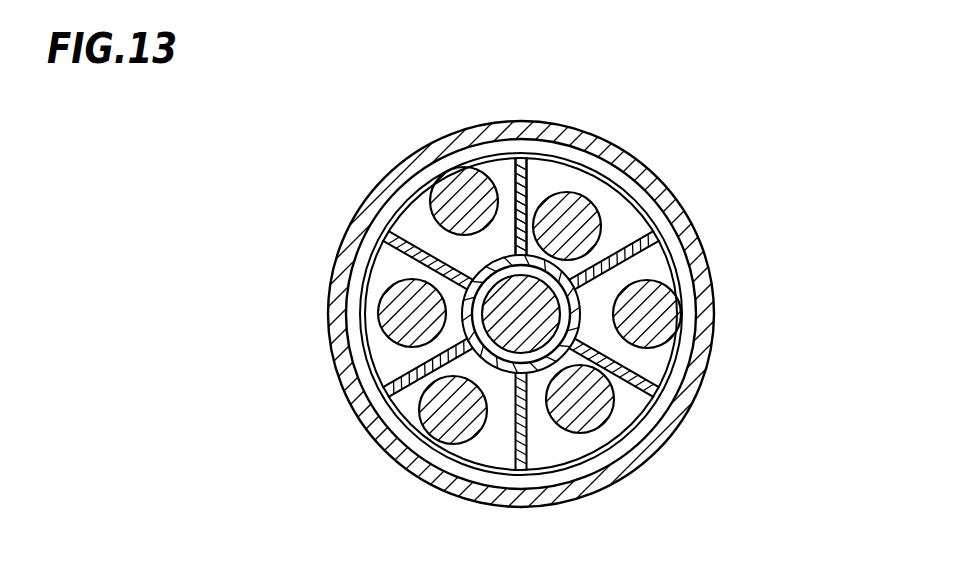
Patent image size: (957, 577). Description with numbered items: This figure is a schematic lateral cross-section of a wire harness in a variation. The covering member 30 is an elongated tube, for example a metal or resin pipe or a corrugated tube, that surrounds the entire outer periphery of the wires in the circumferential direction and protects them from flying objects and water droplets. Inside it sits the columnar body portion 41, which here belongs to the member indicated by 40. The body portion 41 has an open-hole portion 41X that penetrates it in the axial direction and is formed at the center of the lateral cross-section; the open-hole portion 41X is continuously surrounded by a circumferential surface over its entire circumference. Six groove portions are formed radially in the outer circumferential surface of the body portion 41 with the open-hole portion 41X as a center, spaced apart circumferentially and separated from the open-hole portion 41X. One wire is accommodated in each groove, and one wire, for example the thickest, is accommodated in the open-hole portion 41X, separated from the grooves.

The covering member 30 is at (602, 147).
The partition member 40 is at (521, 314).
The body portion 41 is at (520, 153).
The open-hole portion 41X is at (498, 357).